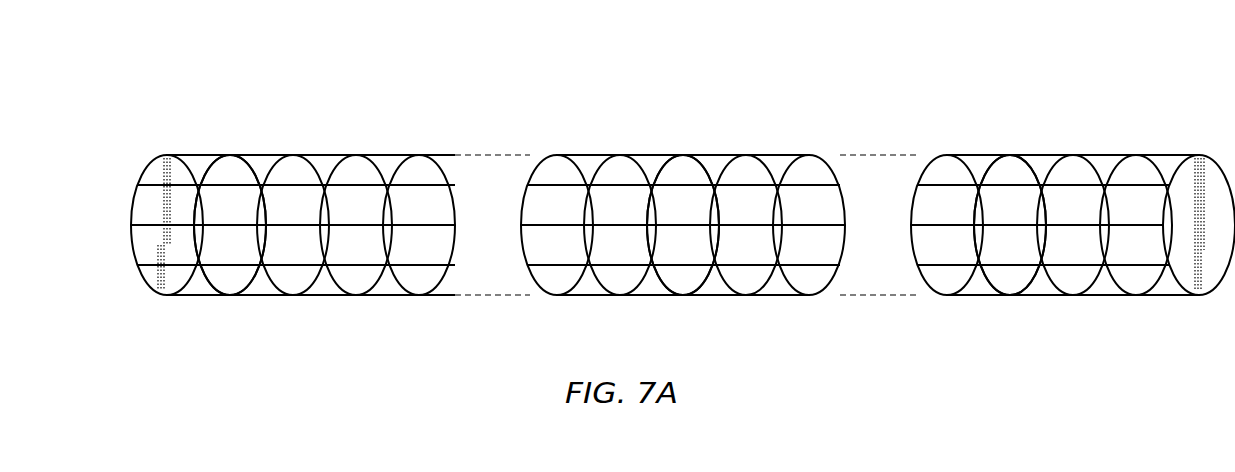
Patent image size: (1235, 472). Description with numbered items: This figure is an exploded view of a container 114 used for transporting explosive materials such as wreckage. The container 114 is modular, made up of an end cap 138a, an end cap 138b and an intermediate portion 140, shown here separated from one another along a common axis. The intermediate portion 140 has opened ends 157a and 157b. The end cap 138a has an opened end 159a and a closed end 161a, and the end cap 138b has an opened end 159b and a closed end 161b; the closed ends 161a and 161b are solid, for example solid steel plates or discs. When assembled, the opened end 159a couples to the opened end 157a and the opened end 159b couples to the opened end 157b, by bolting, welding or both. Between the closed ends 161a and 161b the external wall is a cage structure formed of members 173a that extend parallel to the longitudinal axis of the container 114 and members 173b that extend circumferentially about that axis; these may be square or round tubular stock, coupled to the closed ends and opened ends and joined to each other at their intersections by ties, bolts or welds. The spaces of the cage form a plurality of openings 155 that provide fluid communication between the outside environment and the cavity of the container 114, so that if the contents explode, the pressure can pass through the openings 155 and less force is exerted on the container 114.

The container 114 is at (168, 113).
The end cap 138a is at (263, 228).
The end cap 138b is at (1073, 224).
The intermediate portion 140 is at (683, 223).
The openings 155 is at (240, 177).
The opened end 157a is at (550, 175).
The opened end 157b is at (817, 170).
The opened end 159a is at (418, 172).
The opened end 159b is at (928, 198).
The closed end 161a is at (153, 173).
The closed end 161b is at (1187, 183).
The members 173a is at (365, 267).
The members 173b is at (207, 283).